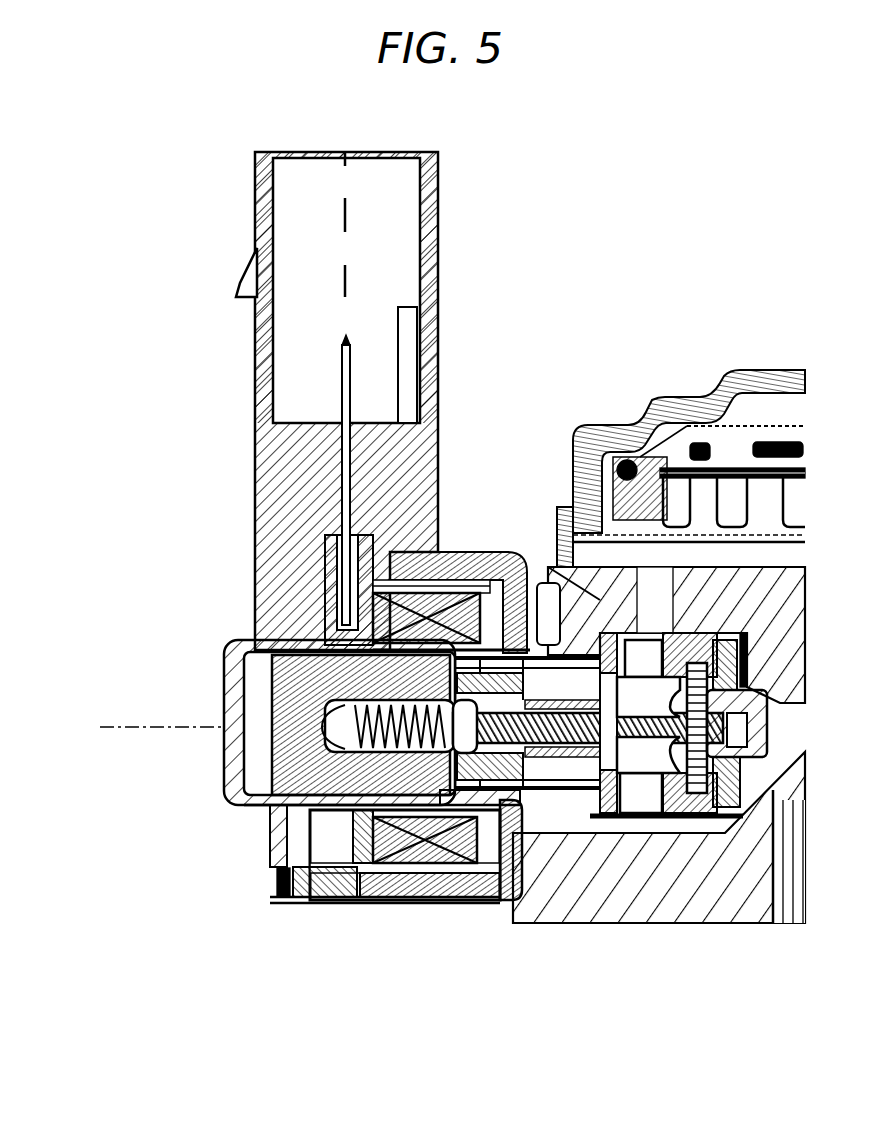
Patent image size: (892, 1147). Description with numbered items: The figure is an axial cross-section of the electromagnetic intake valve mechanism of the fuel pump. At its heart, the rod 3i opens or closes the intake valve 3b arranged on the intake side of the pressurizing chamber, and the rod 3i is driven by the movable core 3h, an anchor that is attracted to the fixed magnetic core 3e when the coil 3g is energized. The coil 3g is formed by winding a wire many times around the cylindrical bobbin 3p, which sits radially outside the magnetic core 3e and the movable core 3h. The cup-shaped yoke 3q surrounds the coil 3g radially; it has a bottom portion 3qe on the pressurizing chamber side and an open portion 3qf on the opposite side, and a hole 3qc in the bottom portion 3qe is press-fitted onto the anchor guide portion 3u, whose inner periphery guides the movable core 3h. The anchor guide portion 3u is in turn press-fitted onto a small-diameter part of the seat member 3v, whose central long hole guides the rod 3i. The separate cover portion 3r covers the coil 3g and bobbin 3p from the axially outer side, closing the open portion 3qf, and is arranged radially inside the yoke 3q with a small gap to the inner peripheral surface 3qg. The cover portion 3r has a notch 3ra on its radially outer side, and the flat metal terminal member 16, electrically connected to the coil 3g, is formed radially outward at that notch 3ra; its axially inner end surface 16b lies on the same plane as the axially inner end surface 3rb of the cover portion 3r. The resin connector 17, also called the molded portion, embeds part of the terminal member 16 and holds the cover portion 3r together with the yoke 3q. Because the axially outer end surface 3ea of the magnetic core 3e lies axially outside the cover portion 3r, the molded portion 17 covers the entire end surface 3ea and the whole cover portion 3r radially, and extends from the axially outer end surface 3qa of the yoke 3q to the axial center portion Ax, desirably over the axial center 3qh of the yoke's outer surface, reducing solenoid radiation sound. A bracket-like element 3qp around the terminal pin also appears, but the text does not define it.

The terminal member 16 is at (340, 342).
The connector 17 is at (290, 525).
The axially inner end surface of the terminal member 16b is at (402, 476).
The open portion 3qf is at (375, 622).
The bottom portion 3qe is at (507, 587).
The pin holder 3qp is at (360, 635).
The notch 3ra is at (300, 636).
The magnetic core 3e is at (300, 680).
The axial center portion Ax is at (146, 727).
The axially outer end surface of the magnetic core 3ea is at (322, 760).
The axially inner end surface of the cover portion 3rb is at (350, 827).
The cover portion 3r is at (320, 827).
The axially outer end surface of the yoke 3qa is at (297, 893).
The inner peripheral surface of the yoke 3qg is at (330, 887).
The bobbin 3p is at (368, 867).
The axial center of the outer peripheral surface of the yoke 3qh is at (407, 900).
The coil 3g is at (460, 837).
The yoke 3q is at (460, 890).
The hole 3qc is at (513, 863).
The movable core 3h is at (515, 770).
The anchor guide portion 3u is at (547, 807).
The seat member 3v is at (600, 800).
The rod 3i is at (620, 733).
The intake valve 3b is at (697, 773).